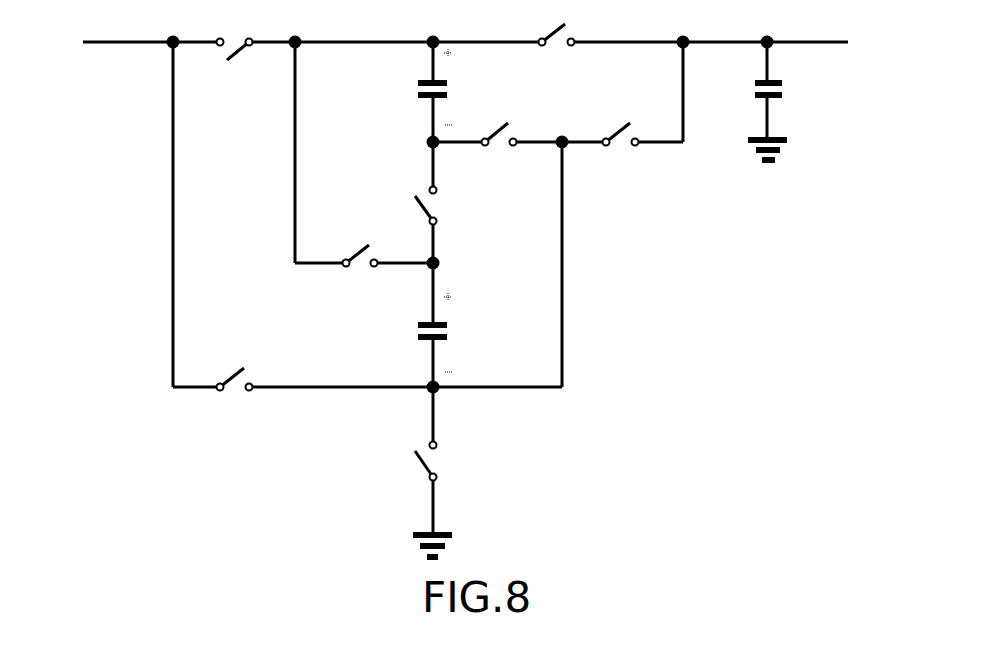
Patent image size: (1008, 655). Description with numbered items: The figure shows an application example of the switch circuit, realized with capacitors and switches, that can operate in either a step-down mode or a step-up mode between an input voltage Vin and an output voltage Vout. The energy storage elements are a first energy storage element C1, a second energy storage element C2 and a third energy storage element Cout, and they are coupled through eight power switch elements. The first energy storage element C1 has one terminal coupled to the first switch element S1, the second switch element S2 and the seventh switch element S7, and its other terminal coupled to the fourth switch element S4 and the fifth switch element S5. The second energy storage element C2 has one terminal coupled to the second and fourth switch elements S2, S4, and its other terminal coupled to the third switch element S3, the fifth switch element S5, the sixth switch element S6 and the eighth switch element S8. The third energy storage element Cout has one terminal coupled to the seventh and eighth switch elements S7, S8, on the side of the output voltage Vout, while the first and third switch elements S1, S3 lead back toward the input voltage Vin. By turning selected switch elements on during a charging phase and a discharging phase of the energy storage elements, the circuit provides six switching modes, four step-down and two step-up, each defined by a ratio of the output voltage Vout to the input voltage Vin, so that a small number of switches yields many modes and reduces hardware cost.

The input voltage Vin is at (88, 18).
The output voltage Vout is at (821, 18).
The first switch element S1 is at (235, 32).
The second switch element S2 is at (360, 278).
The third switch element S3 is at (235, 400).
The fourth switch element S4 is at (444, 207).
The fifth switch element S5 is at (499, 153).
The sixth switch element S6 is at (441, 500).
The seventh switch element S7 is at (557, 52).
The eighth switch element S8 is at (621, 153).
The first energy storage element C1 is at (450, 94).
The second energy storage element C2 is at (450, 337).
The third energy storage element Cout is at (790, 120).